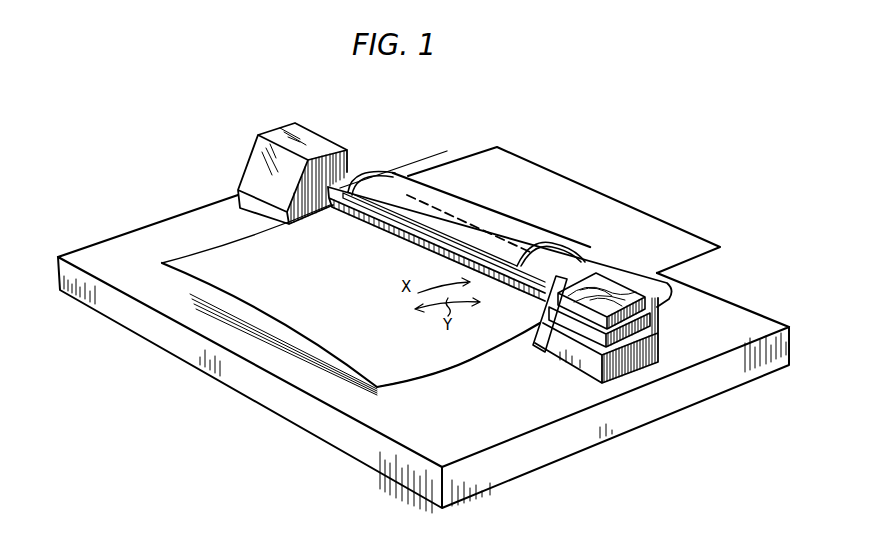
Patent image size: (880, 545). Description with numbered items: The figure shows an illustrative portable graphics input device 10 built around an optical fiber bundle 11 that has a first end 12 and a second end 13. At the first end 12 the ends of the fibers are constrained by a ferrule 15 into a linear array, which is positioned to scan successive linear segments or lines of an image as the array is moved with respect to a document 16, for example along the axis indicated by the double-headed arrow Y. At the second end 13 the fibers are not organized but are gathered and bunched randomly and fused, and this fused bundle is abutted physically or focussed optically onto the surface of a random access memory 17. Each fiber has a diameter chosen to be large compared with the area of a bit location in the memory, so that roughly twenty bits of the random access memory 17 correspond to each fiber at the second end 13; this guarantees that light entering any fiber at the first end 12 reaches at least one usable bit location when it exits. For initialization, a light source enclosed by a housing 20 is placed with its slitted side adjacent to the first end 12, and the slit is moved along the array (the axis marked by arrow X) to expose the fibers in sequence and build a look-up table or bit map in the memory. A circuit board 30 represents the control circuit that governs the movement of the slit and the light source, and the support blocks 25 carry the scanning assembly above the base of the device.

The portable graphics input device 10 is at (488, 413).
The optical fiber bundle 11 is at (554, 241).
The first end 12 is at (411, 232).
The second end 13 is at (602, 290).
The ferrule 15 is at (377, 217).
The document 16 is at (175, 272).
The Random Access Memory (RAM) 17 is at (653, 321).
The housing 20 is at (462, 360).
The support block 25 is at (327, 142).
The circuit board 30 is at (556, 337).